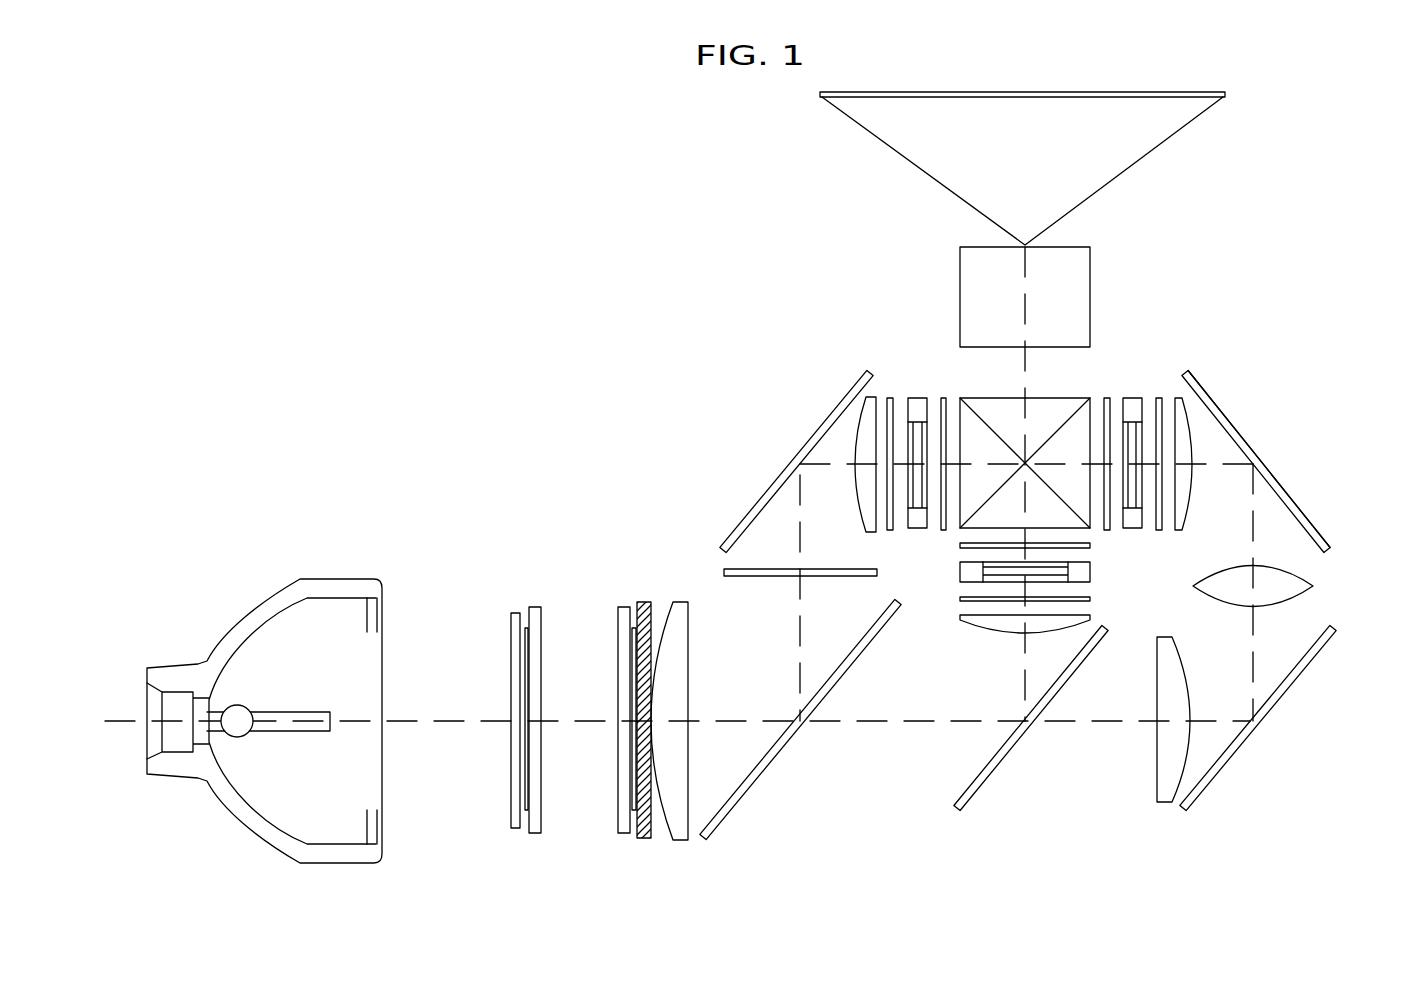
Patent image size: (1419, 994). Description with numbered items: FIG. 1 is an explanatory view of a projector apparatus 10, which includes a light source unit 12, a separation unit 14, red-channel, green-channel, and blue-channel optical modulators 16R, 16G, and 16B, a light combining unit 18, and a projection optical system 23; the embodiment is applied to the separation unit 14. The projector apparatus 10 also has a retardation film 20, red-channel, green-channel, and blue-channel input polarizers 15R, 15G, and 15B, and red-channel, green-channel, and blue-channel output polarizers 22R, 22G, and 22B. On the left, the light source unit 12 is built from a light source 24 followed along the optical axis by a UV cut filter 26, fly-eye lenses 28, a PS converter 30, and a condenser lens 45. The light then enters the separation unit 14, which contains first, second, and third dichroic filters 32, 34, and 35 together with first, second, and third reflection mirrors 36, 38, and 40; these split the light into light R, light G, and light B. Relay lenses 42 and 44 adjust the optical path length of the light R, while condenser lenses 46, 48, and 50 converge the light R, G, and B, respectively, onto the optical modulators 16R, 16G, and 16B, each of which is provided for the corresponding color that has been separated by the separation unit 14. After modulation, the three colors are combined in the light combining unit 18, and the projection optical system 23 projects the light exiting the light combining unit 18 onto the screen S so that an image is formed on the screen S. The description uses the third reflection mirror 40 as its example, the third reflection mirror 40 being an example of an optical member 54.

The projector apparatus 10 is at (694, 123).
The light source unit 12 is at (407, 535).
The separation unit 14 is at (1090, 805).
The blue-channel input polarizer 15B is at (890, 402).
The green-channel input polarizer 15G is at (963, 601).
The red-channel input polarizer 15R is at (1160, 402).
The blue-channel optical modulator 16B is at (918, 403).
The green-channel optical modulator 16G is at (1090, 572).
The red-channel optical modulator 16R is at (1133, 402).
The light combining unit 18 is at (1065, 393).
The retardation film 20 is at (957, 432).
The blue-channel output polarizer 22B is at (944, 402).
The green-channel output polarizer 22G is at (963, 545).
The red-channel output polarizer 22R is at (1108, 402).
The projection optical system 23 is at (1090, 260).
The light source 24 is at (306, 580).
The UV cut filter 26 is at (512, 627).
The fly-eye lenses 28 is at (535, 627).
The PS converter 30 is at (653, 617).
The first dichroic filter 32 is at (737, 797).
The second dichroic filter 34 is at (972, 785).
The third dichroic filter 35 is at (1175, 498).
The first reflection mirror 36 is at (745, 527).
The second reflection mirror 38 is at (1215, 775).
The third reflection mirror 40 is at (1302, 527).
The relay lens 42 is at (1162, 770).
The relay lens 44 is at (1288, 595).
The condenser lens 45 is at (672, 825).
The condenser lens 46 is at (1187, 427).
The condenser lens 48 is at (988, 622).
The condenser lens 50 is at (862, 427).
The optical member 54 is at (1025, 624).
The screen S is at (1142, 98).
The blue light B is at (800, 597).
The green light G is at (1022, 648).
The red light R is at (1253, 637).